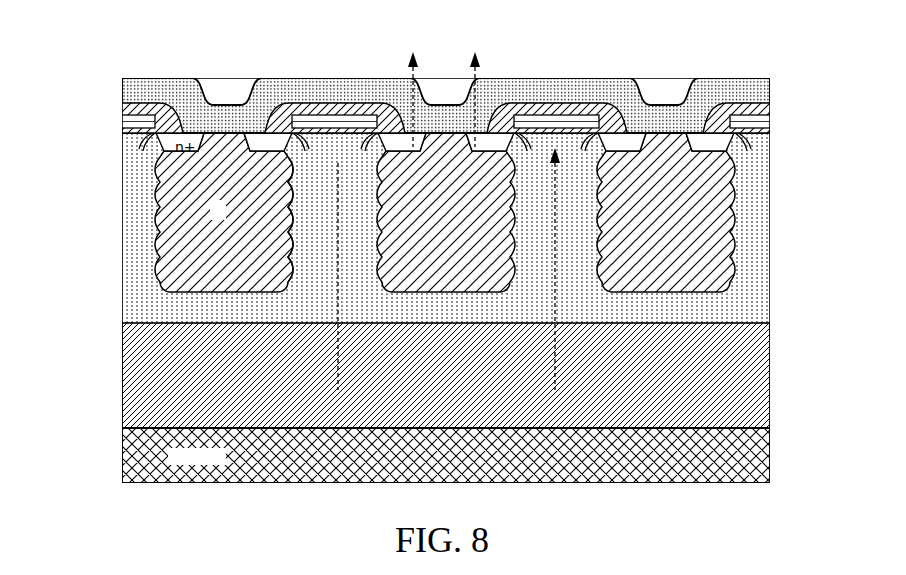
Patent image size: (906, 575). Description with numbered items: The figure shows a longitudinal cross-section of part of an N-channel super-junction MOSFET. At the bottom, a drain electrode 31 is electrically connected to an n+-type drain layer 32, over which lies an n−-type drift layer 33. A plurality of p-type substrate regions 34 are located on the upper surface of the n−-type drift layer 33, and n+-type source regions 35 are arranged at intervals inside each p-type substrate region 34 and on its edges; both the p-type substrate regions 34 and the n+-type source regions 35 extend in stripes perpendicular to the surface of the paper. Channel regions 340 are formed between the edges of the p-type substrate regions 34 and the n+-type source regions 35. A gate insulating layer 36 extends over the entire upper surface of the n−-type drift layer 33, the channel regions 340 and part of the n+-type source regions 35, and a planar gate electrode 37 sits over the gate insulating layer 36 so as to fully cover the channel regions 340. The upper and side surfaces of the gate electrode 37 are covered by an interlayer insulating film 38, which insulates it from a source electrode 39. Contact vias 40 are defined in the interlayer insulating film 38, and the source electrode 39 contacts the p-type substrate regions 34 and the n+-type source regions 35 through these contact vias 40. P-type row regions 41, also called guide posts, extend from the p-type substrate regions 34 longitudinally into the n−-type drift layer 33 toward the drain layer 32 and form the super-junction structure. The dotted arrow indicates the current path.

The drain electrode 31 is at (126, 458).
The n+-type drain layer 32 is at (143, 368).
The n−-type drift layer 33 is at (138, 277).
The p-type substrate region 34 is at (152, 148).
The n+-type source region 35 is at (160, 156).
The gate insulating layer 36 is at (446, 268).
The gate electrode 37 is at (366, 132).
The interlayer insulating film 38 is at (333, 121).
The source electrode 39 is at (330, 90).
The contact via 40 is at (228, 133).
The p-type row region 41 is at (288, 277).
The channel region 340 is at (297, 143).